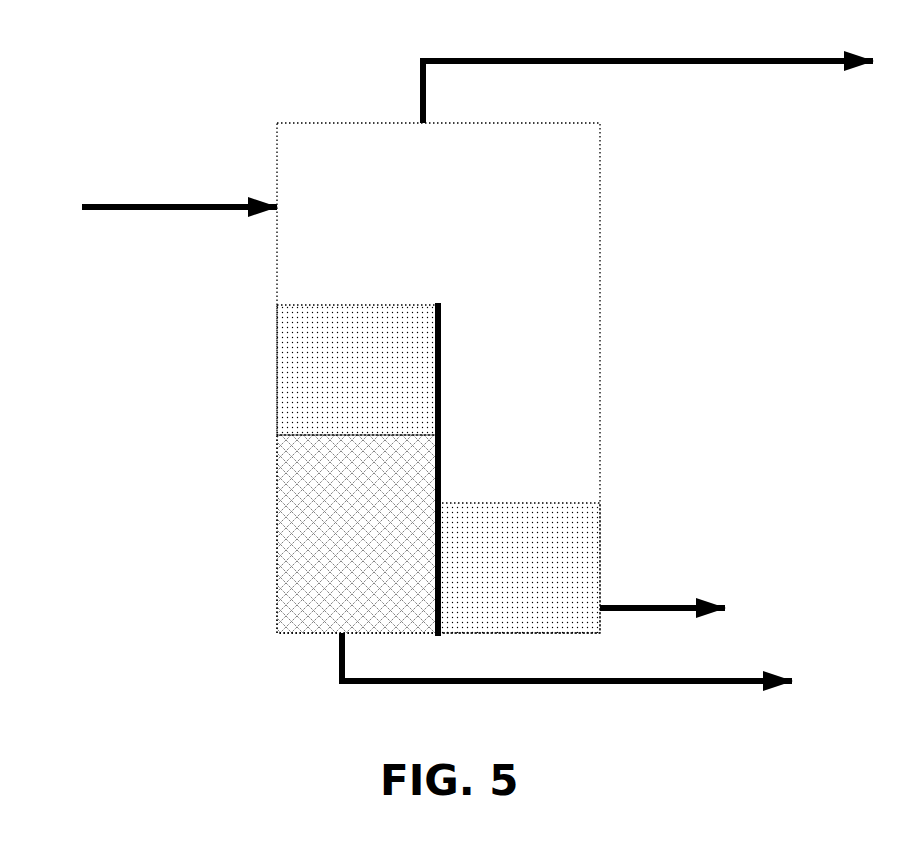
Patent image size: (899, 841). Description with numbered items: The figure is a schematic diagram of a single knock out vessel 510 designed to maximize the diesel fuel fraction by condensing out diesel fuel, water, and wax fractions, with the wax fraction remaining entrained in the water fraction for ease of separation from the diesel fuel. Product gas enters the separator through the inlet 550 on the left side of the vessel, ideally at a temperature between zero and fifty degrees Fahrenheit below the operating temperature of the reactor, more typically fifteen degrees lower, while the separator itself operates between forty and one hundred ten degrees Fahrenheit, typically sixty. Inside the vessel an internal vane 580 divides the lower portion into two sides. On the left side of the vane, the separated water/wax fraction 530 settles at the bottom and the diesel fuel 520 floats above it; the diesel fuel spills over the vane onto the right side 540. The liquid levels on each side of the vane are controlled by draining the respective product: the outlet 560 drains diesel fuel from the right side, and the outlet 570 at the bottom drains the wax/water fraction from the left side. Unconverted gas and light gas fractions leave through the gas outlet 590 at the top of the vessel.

The knock out vessel 510 is at (316, 120).
The diesel fuel 520 is at (300, 368).
The water/wax fraction 530 is at (290, 516).
The right side of vane 540 is at (579, 540).
The inlet 550 is at (181, 201).
The outlet for diesel fuel 560 is at (665, 604).
The outlet for wax/water 570 is at (719, 677).
The vane 580 is at (446, 378).
The gas outlet 590 is at (620, 56).